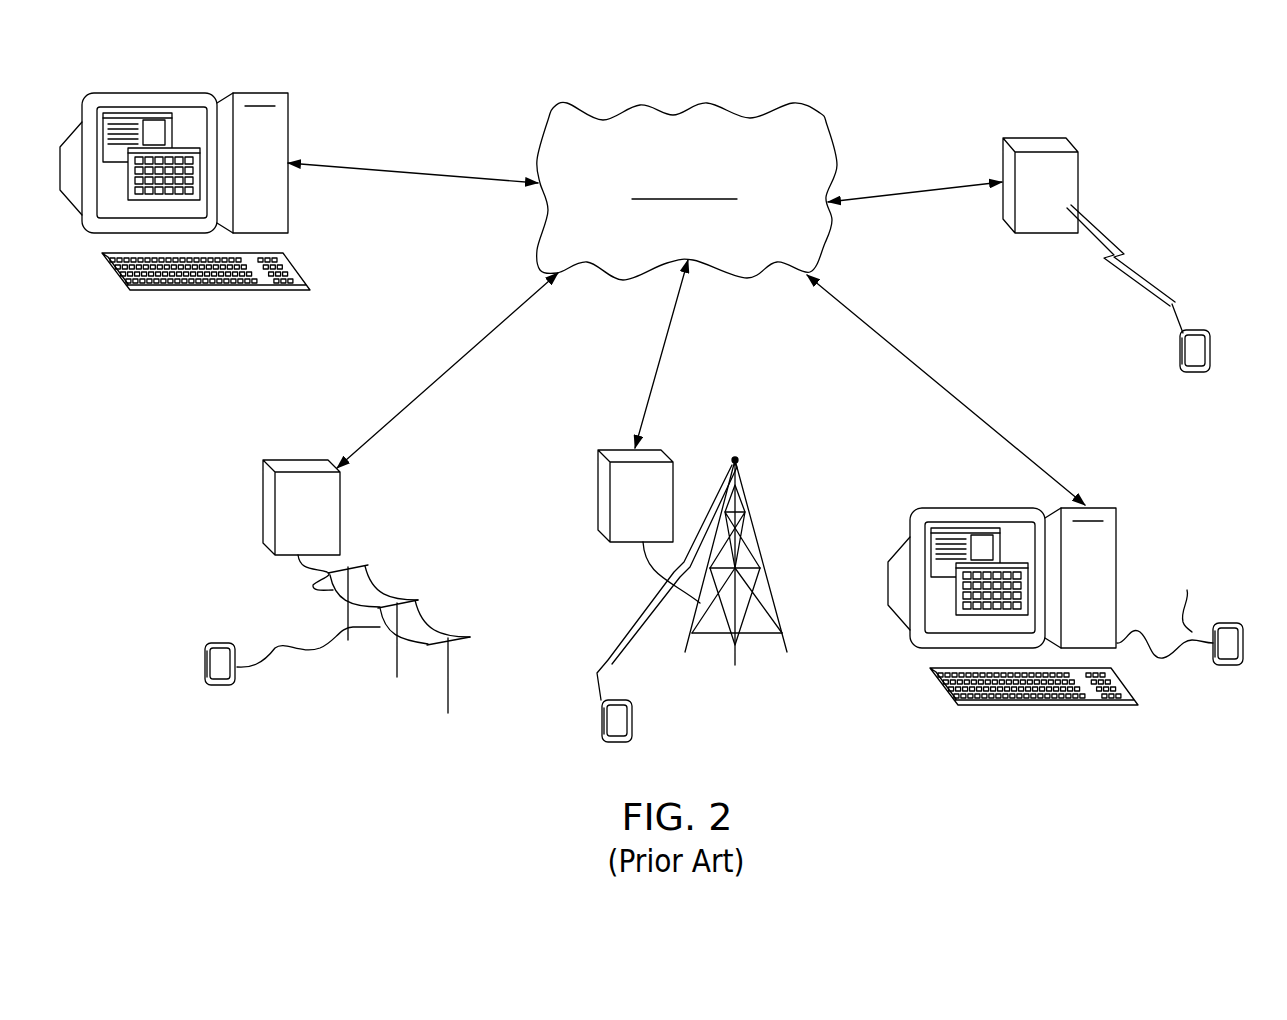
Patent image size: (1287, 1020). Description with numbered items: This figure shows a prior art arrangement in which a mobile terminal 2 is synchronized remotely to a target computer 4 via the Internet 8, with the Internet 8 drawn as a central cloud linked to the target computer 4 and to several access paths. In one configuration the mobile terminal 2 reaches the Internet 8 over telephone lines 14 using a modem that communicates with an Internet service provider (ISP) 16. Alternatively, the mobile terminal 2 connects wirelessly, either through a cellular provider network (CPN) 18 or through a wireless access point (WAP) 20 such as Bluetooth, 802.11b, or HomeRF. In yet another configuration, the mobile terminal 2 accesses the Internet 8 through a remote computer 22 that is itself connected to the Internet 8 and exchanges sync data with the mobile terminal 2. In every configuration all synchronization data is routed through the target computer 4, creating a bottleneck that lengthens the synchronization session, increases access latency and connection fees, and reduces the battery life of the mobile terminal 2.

The mobile terminal 2 is at (1215, 330).
The target computer 4 is at (322, 117).
The Internet 8 is at (847, 113).
The telephone lines 14 is at (405, 582).
The Internet service provider (ISP) 16 is at (242, 460).
The cellular provider network (CPN) 18 is at (578, 467).
The wireless access point (WAP) 20 is at (1107, 173).
The remote computer 22 is at (1138, 543).